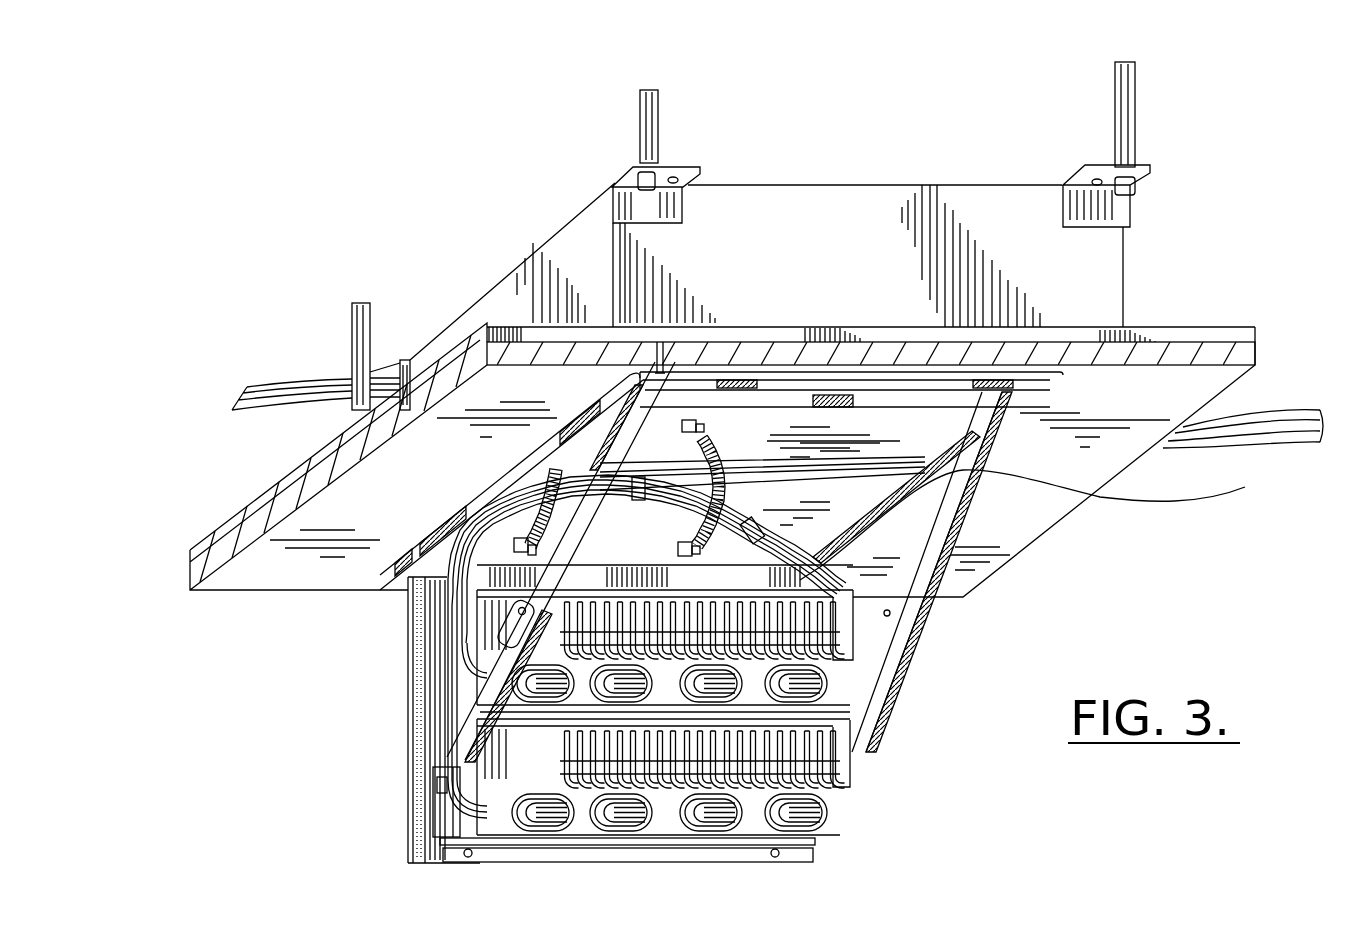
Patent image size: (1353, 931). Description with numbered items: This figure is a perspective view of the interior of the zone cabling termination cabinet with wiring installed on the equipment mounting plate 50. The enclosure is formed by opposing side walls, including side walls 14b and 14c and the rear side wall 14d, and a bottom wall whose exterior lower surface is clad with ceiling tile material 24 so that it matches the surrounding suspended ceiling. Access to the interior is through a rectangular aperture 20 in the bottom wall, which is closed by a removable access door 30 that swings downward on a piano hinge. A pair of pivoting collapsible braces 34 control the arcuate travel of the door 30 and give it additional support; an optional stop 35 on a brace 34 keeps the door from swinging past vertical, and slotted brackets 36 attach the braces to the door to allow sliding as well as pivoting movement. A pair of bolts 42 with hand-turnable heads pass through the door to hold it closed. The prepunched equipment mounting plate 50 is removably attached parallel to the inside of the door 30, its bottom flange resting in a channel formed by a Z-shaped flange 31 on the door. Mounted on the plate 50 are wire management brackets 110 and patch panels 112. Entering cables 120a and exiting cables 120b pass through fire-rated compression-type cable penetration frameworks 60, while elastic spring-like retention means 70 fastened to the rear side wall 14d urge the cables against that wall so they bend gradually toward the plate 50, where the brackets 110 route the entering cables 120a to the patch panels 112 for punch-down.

The side wall 14b is at (537, 270).
The side wall 14c is at (960, 203).
The rear side wall 14d is at (802, 340).
The ceiling tile material 24 is at (1198, 385).
The aperture 20 is at (845, 509).
The removable access door 30 is at (910, 433).
The Z-shaped flange 31 is at (840, 846).
The pivoting collapsible brace 34 is at (457, 742).
The stop 35 is at (510, 630).
The slotted bracket 36 is at (443, 803).
The bolt 42 is at (470, 858).
The equipment mounting plate 50 is at (462, 716).
The cable penetration framework 60 is at (393, 360).
The retention means 70 is at (693, 438).
The wire management bracket 110 is at (473, 673).
The patch panel 112 is at (847, 647).
The entering cable 120a is at (1248, 445).
The exiting cable 120b is at (305, 382).